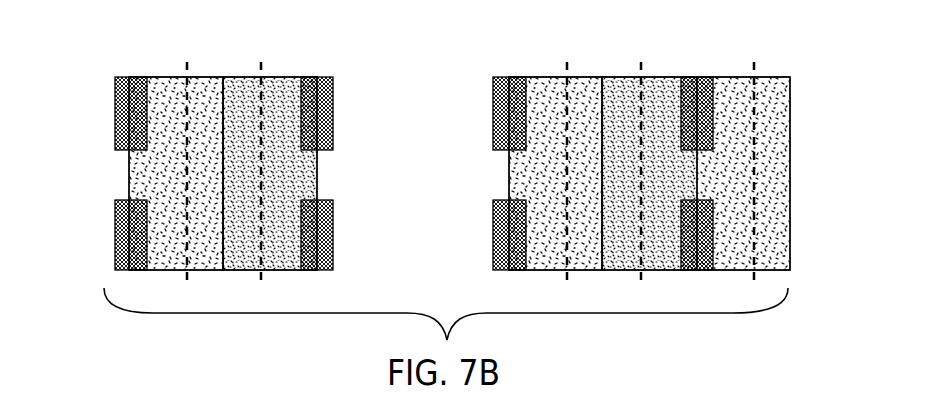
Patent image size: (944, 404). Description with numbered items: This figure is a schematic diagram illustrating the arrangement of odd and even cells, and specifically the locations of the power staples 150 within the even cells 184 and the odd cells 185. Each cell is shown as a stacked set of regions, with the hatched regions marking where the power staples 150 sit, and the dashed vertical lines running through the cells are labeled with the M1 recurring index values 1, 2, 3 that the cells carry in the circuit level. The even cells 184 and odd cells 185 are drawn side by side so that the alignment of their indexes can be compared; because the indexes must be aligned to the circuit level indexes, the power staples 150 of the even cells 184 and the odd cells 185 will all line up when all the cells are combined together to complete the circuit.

The power staples 150 is at (104, 212).
The even cells 184 is at (328, 172).
The odd cells 185 is at (802, 137).
The M1 recurring index 1 is at (417, 150).
The M1 recurring index 2 is at (471, 158).
The M1 recurring index 3 is at (451, 158).